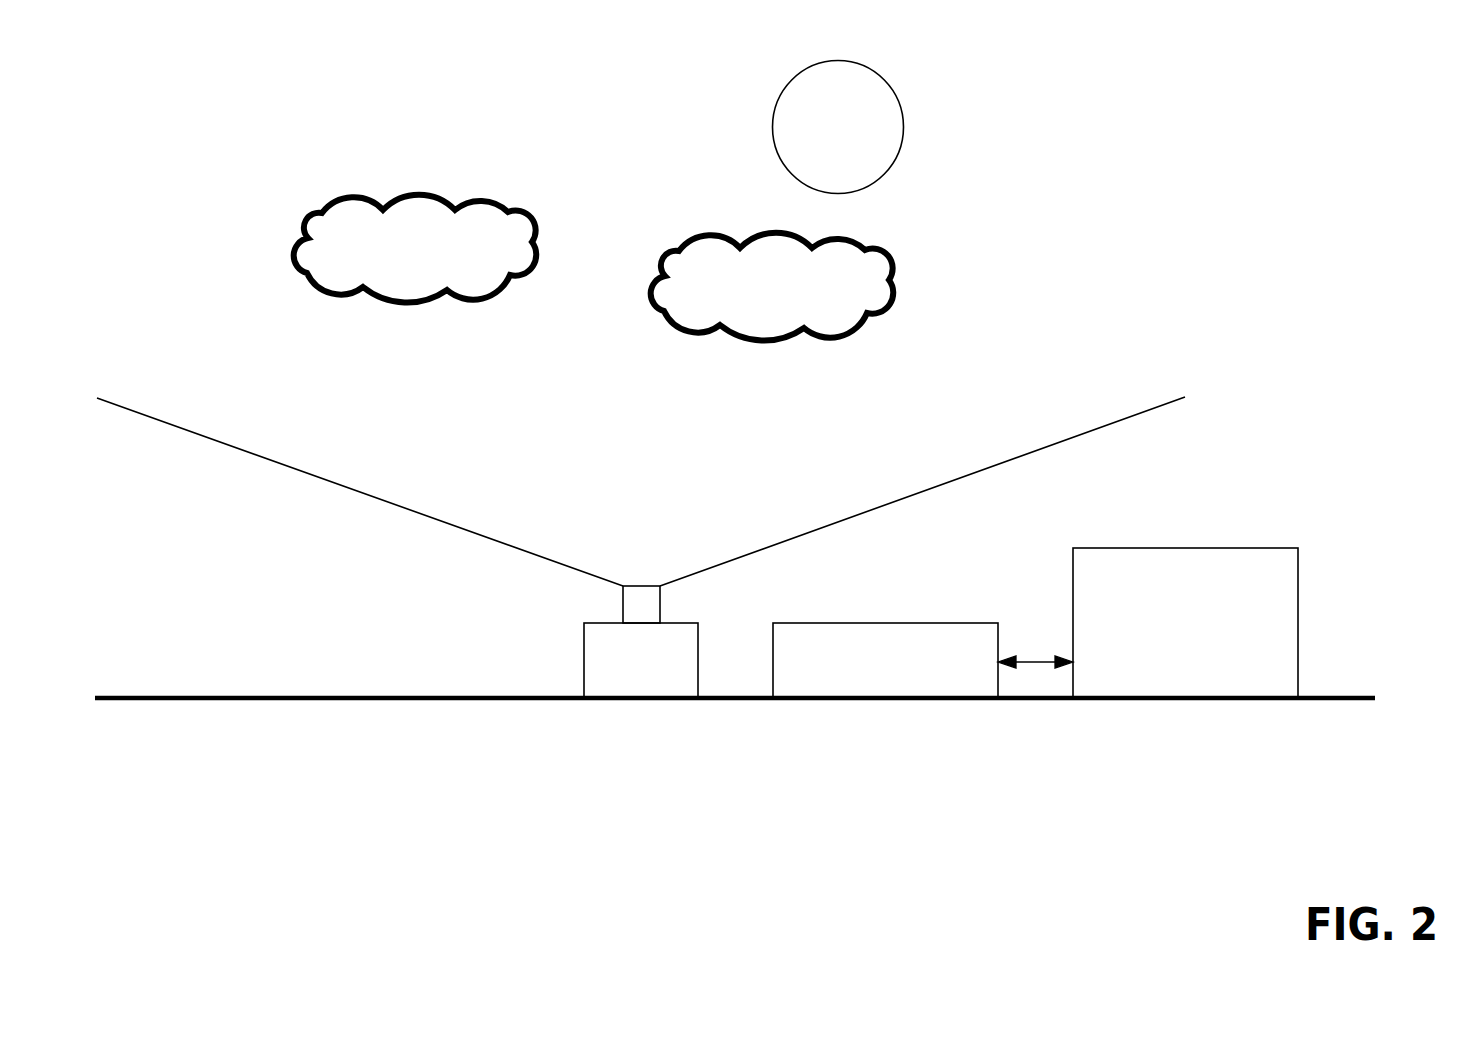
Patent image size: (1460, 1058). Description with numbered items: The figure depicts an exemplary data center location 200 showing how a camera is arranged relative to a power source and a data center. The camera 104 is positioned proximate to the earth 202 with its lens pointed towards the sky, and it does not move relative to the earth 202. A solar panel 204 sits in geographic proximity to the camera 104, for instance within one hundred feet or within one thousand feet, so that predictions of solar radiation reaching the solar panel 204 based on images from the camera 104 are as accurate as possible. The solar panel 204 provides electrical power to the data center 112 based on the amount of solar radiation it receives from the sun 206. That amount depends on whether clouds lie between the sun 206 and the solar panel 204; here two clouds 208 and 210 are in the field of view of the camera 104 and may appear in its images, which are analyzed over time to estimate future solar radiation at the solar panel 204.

The data center location 200 is at (1183, 212).
The earth 202 is at (247, 696).
The solar panel 204 is at (885, 623).
The sun 206 is at (772, 115).
The cloud 208 is at (332, 200).
The cloud 210 is at (687, 238).
The camera 104 is at (585, 660).
The data center 112 is at (1185, 548).